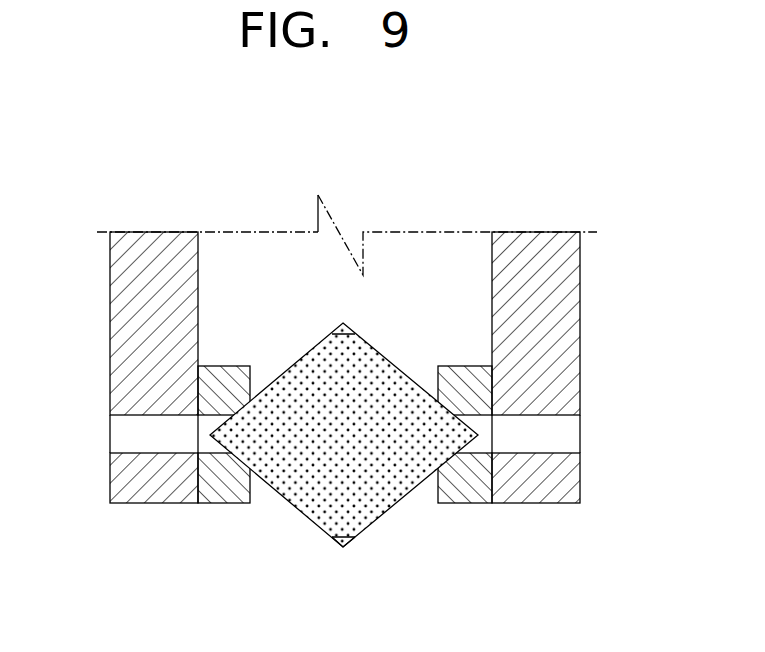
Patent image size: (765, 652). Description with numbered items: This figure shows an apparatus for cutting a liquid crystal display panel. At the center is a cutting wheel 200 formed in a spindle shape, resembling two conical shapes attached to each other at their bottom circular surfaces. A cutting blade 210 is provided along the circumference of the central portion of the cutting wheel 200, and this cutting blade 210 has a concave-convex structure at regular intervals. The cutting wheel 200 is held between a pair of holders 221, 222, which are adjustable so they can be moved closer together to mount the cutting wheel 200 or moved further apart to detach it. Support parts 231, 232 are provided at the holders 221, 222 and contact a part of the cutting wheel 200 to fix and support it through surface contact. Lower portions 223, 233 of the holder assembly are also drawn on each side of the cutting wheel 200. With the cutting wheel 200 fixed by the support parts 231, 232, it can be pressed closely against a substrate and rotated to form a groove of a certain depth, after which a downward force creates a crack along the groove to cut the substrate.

The cutting wheel 200 is at (318, 514).
The cutting blade 210 is at (345, 552).
The holder 221 is at (120, 315).
The holder 222 is at (572, 315).
The lower holding block 223 is at (138, 436).
The support part 231 is at (205, 385).
The support part 232 is at (482, 385).
The lower inner block 233 is at (206, 436).